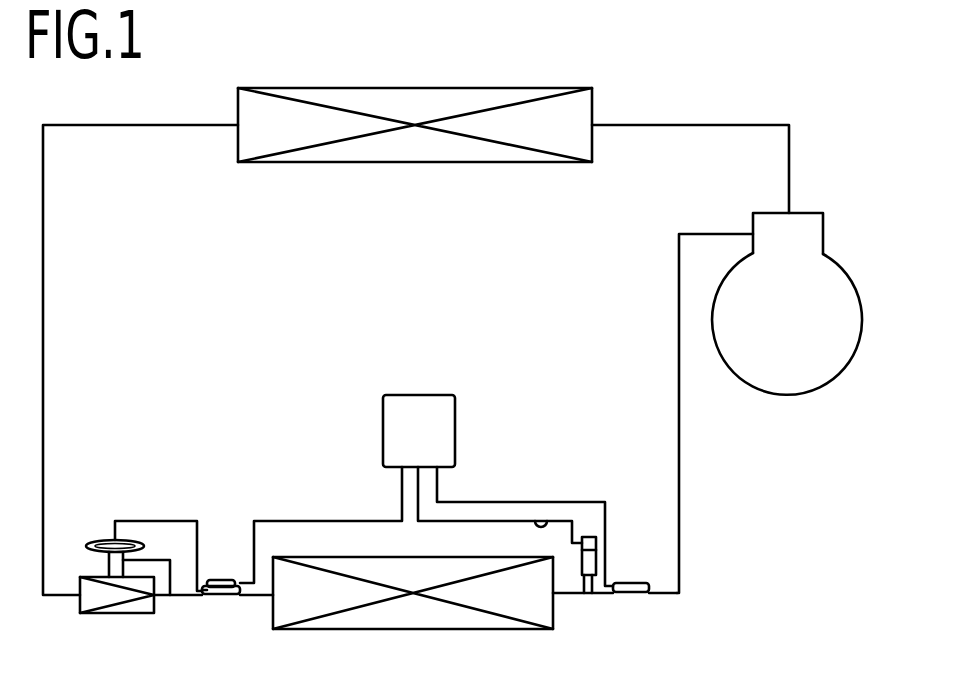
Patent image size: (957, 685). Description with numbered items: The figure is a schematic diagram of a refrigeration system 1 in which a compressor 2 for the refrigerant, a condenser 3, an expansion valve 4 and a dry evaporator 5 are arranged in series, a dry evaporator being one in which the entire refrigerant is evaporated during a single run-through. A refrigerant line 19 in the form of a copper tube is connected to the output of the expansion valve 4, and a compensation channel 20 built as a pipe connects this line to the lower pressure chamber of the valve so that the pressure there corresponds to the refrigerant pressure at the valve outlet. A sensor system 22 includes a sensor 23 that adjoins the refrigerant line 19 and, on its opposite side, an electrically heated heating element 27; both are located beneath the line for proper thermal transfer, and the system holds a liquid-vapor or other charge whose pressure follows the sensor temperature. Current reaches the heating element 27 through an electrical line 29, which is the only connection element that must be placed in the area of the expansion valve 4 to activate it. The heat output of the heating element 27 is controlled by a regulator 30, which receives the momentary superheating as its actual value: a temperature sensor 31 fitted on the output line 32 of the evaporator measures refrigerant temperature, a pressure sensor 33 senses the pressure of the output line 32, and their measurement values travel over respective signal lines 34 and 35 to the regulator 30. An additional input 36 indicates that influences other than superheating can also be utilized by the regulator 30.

The refrigeration system 1 is at (314, 321).
The compressor 2 is at (835, 277).
The condenser 3 is at (473, 153).
The expansion valve 4 is at (99, 512).
The dry evaporator 5 is at (433, 620).
The refrigerant line 19 is at (255, 598).
The compensation channel 20 is at (173, 583).
The sensor system 22 is at (178, 514).
The sensor 23 is at (220, 599).
The heating element 27 is at (221, 579).
The electrical line 29 is at (296, 518).
The regulator 30 is at (405, 449).
The temperature sensor 31 is at (628, 596).
The output line 32 is at (666, 595).
The pressure sensor 33 is at (585, 575).
The signal line 34 is at (528, 500).
The signal line 35 is at (548, 521).
The additional input 36 is at (417, 387).